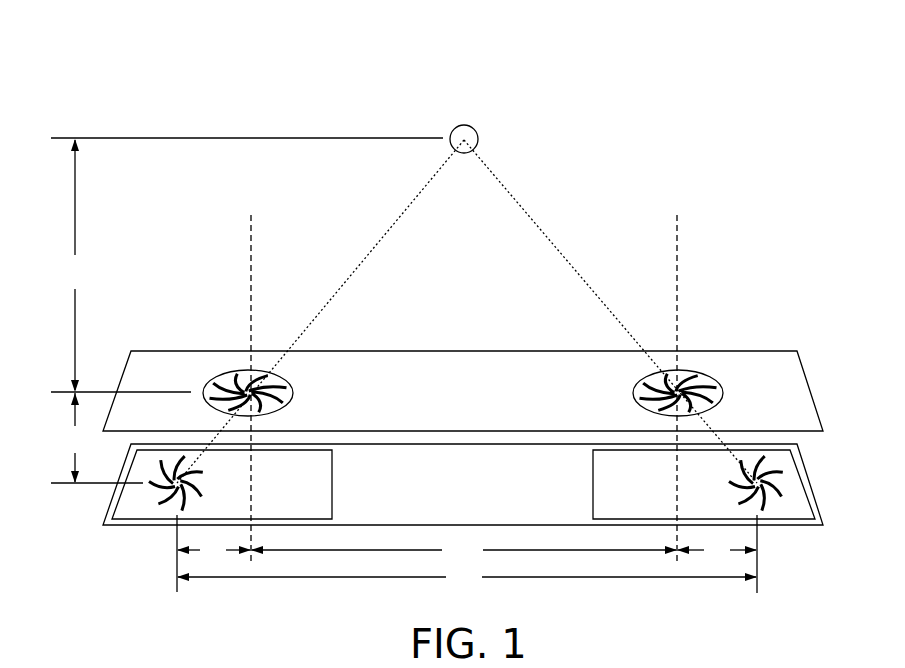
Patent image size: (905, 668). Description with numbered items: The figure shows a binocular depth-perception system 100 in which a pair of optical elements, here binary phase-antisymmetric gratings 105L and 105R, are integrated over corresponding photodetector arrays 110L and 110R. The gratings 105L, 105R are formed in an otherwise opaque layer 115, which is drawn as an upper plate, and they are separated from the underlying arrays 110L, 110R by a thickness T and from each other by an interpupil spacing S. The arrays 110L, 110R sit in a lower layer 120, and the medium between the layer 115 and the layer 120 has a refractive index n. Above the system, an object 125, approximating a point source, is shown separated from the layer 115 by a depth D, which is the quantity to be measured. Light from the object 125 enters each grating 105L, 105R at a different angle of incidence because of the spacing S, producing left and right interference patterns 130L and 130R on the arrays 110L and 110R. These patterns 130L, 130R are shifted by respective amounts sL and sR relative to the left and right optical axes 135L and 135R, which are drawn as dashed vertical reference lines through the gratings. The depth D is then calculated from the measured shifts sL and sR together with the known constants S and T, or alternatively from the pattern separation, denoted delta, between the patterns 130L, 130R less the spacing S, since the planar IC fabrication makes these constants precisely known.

The binocular depth-perception system 100 is at (168, 52).
The left grating 105L is at (212, 387).
The right grating 105R is at (718, 387).
The left photodetector array 110L is at (305, 493).
The right photodetector array 110R is at (647, 494).
The opaque layer 115 is at (479, 401).
The layer 120 is at (479, 493).
The object 125 is at (474, 129).
The left interference pattern 130L is at (206, 491).
The right interference pattern 130R is at (734, 488).
The left optical axis 135L is at (252, 257).
The right optical axis 135R is at (678, 257).